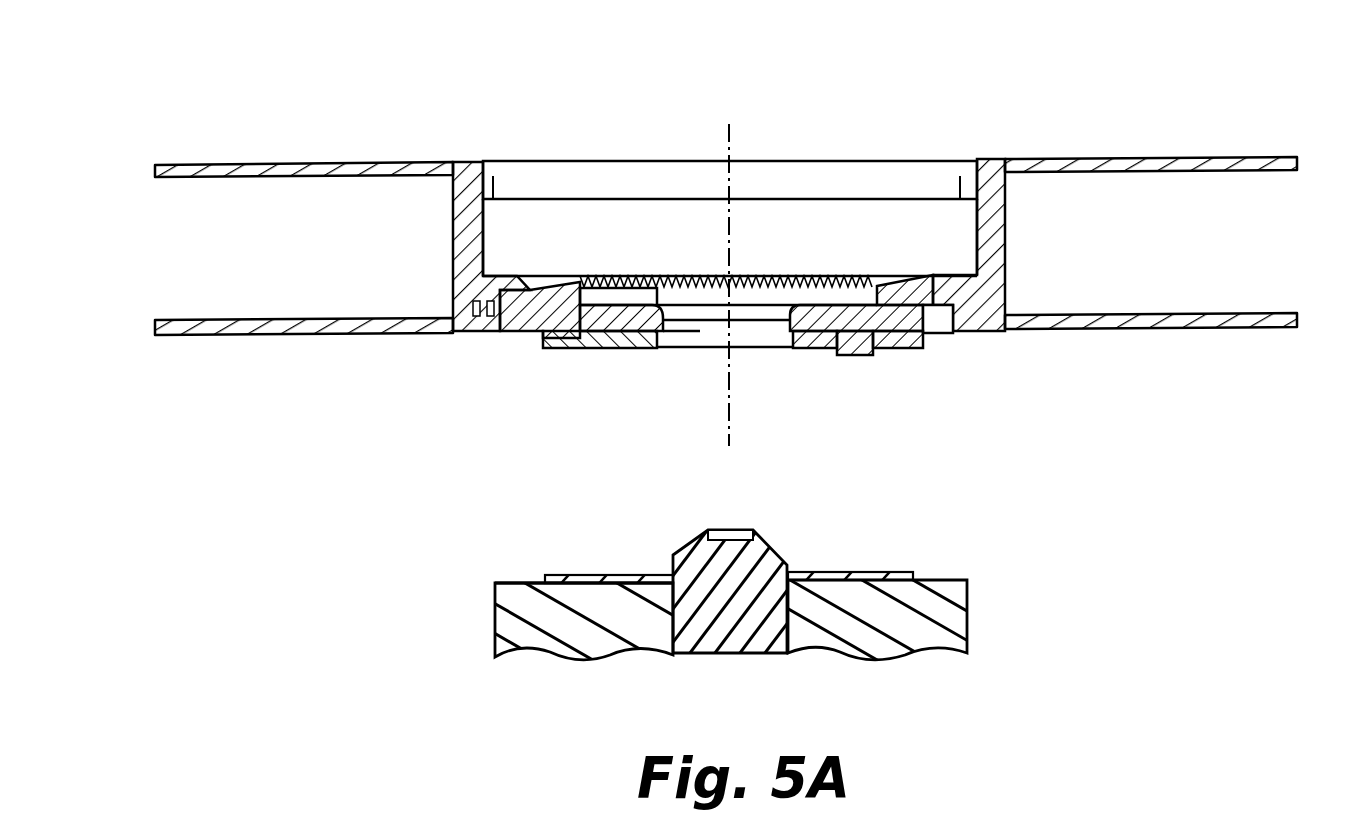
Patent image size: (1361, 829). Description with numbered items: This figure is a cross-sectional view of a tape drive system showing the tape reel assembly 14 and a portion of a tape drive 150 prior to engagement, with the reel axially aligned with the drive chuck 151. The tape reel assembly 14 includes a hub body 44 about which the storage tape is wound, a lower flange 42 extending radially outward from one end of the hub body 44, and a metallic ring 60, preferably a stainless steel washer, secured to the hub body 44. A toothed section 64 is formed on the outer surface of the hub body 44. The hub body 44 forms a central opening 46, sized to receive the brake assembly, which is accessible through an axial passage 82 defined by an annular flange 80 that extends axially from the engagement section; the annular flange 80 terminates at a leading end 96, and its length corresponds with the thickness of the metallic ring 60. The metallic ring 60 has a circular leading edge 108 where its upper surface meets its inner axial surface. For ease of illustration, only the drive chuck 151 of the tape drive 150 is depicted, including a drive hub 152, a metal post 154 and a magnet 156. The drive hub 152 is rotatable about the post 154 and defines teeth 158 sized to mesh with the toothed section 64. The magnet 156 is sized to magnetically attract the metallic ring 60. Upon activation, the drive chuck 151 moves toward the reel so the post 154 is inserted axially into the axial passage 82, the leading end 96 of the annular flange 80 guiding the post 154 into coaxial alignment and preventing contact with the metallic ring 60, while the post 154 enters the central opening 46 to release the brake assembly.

The tape reel assembly 14 is at (1243, 96).
The lower flange 42 is at (1147, 336).
The hub body 44 is at (1023, 226).
The central opening 46 is at (897, 213).
The metallic ring 60 is at (543, 402).
The toothed section 64 is at (511, 338).
The annular flange 80 is at (659, 299).
The axial passage 82 is at (770, 349).
The leading end 96 is at (657, 349).
The leading edge 108 is at (800, 349).
The tape drive 150 is at (996, 693).
The drive chuck 151 is at (983, 594).
The drive hub 152 is at (498, 661).
The metal post 154 is at (666, 528).
The magnet 156 is at (880, 576).
The teeth 158 is at (500, 582).